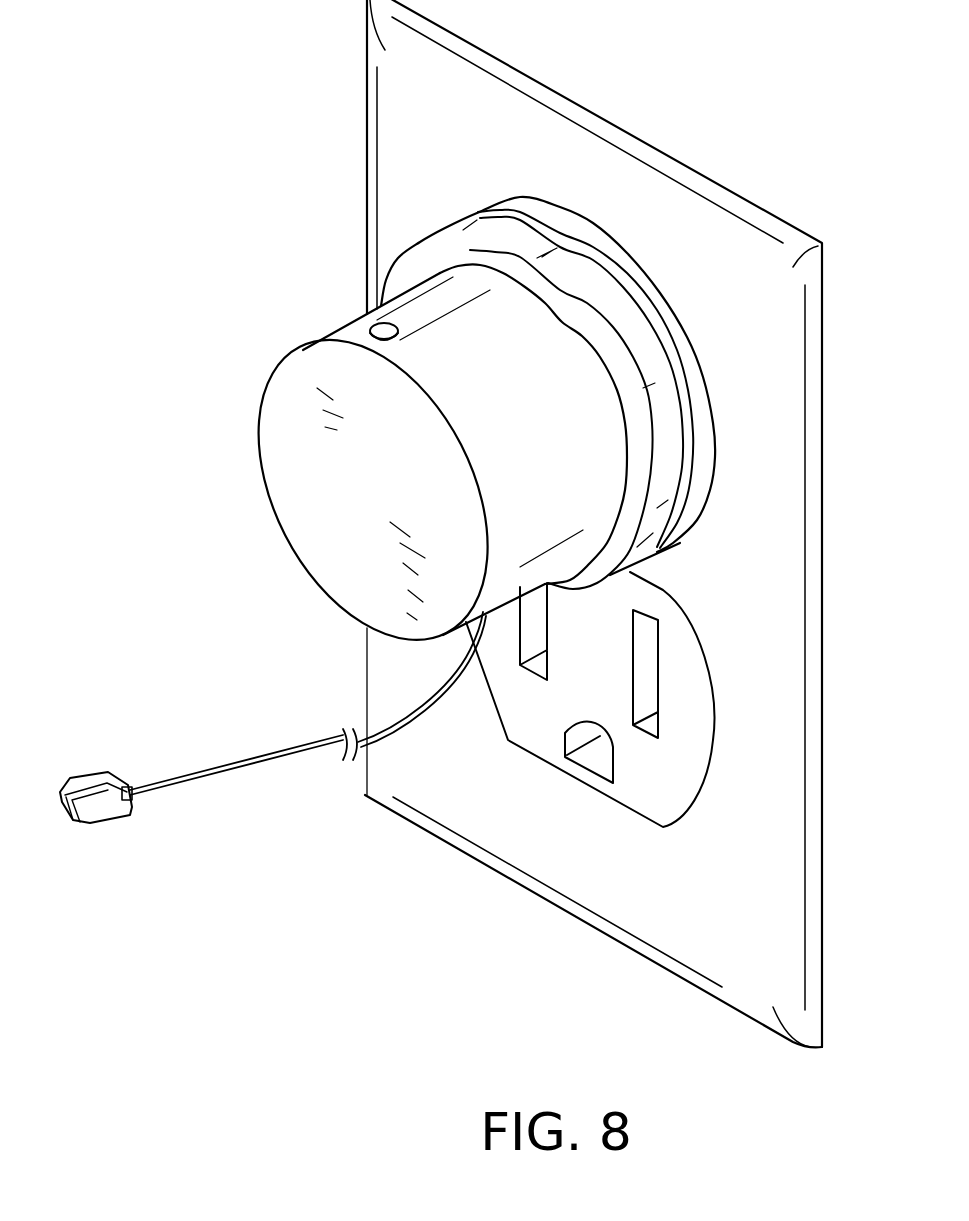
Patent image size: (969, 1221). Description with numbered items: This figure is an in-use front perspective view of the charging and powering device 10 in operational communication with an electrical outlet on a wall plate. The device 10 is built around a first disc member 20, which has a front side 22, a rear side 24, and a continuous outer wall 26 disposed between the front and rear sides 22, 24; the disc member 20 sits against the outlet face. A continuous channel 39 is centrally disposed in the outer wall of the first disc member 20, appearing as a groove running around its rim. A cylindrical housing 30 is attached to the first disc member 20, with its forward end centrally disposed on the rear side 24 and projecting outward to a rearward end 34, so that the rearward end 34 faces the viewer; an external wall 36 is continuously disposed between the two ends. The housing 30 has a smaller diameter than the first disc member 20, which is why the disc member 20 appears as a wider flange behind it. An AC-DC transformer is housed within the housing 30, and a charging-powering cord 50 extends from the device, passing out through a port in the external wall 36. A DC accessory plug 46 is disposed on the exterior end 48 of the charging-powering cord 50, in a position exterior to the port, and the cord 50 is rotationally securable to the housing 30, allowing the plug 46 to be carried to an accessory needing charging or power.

The charging and powering device 10 is at (248, 230).
The first disc member 20 is at (520, 195).
The front side 22 is at (703, 383).
The rear side 24 is at (418, 268).
The continuous outer wall 26 is at (600, 253).
The cylindrical housing 30 is at (297, 352).
The rearward end 34 is at (283, 397).
The external wall 36 is at (323, 342).
The continuous channel 39 is at (470, 207).
The DC accessory plug 46 is at (88, 775).
The exterior end 48 is at (128, 788).
The charging-powering cord 50 is at (292, 762).